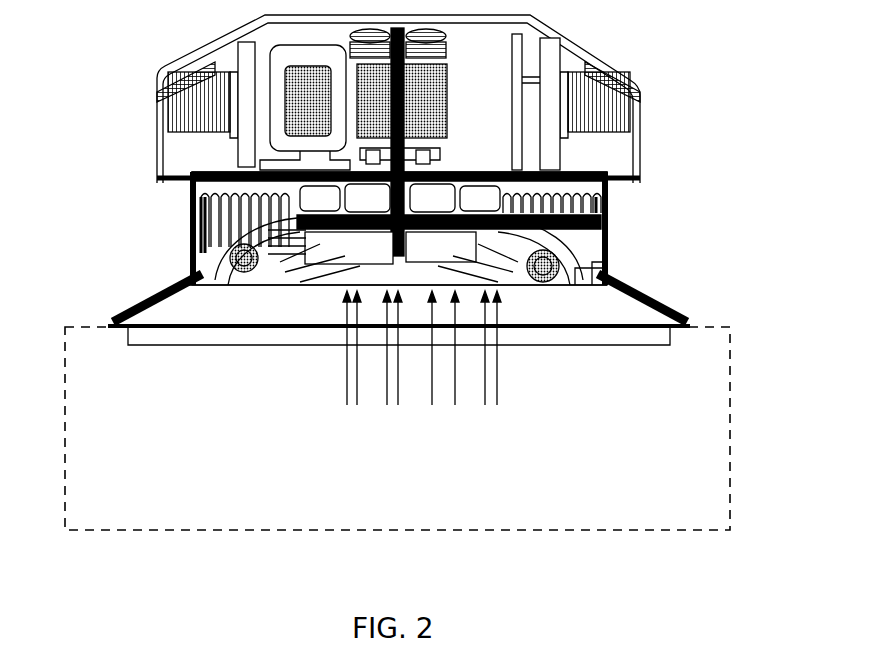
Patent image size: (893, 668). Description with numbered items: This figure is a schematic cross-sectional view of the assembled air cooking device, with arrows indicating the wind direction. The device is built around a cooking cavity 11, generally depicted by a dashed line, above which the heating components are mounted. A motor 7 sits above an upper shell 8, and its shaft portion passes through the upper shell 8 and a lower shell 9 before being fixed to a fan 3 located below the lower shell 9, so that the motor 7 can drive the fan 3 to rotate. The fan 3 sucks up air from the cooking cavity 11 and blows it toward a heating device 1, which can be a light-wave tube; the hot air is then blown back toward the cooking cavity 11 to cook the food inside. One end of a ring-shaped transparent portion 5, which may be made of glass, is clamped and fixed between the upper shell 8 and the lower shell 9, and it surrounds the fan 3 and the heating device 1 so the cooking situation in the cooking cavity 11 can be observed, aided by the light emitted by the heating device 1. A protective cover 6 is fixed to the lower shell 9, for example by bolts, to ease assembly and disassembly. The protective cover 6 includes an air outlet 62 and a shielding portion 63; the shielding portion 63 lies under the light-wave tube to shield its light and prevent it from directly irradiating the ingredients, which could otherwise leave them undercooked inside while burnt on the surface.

The heating device 1 is at (193, 207).
The fan 3 is at (313, 226).
The transparent portion 5 is at (152, 292).
The protective cover 6 is at (308, 270).
The motor 7 is at (450, 64).
The upper shell 8 is at (603, 200).
The lower shell 9 is at (590, 250).
The cooking cavity 11 is at (412, 486).
The air outlet 62 is at (582, 302).
The shielding portion 63 is at (230, 266).